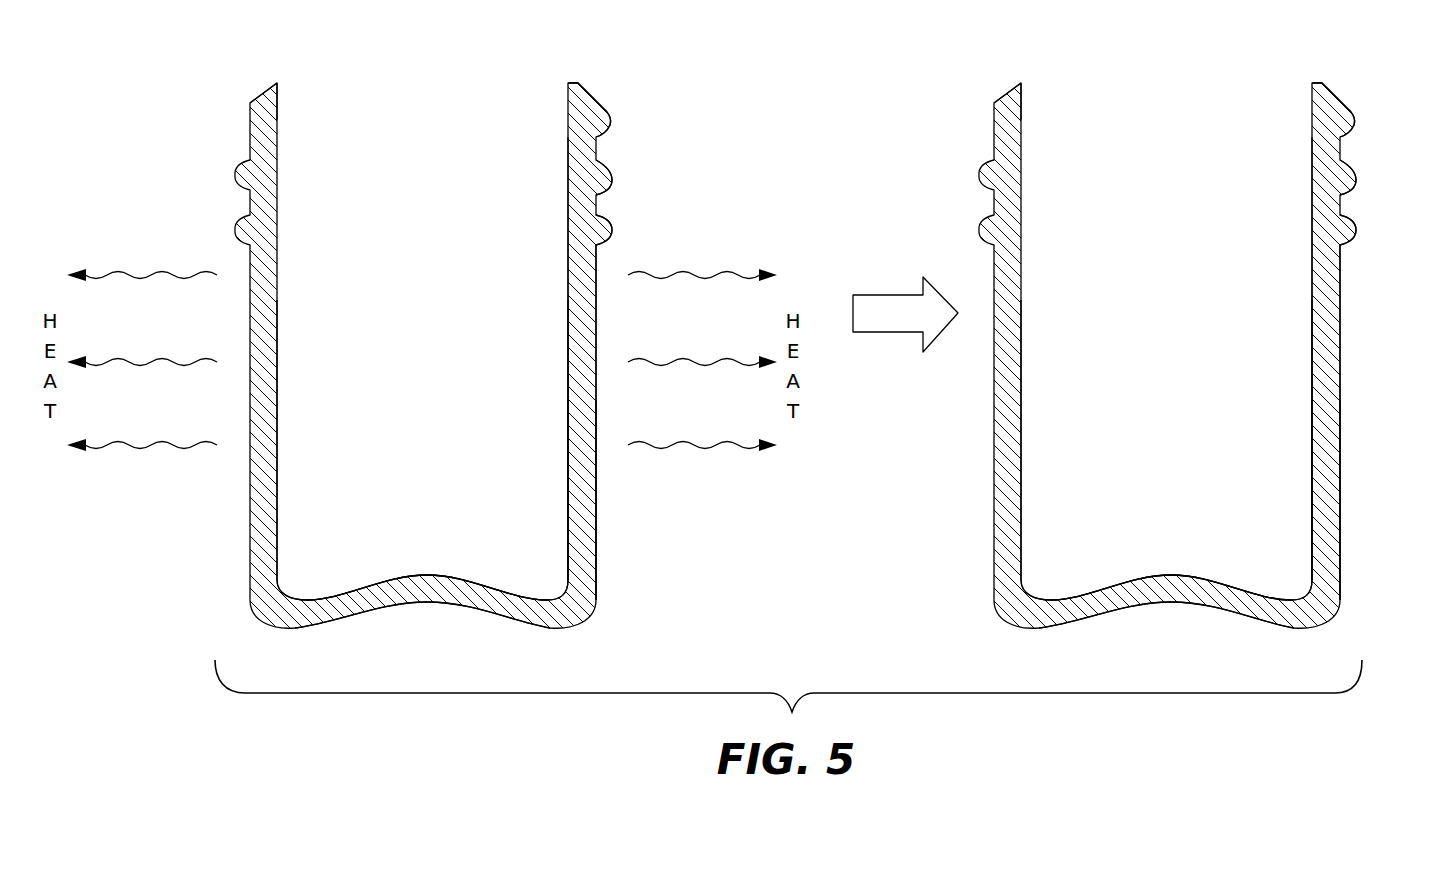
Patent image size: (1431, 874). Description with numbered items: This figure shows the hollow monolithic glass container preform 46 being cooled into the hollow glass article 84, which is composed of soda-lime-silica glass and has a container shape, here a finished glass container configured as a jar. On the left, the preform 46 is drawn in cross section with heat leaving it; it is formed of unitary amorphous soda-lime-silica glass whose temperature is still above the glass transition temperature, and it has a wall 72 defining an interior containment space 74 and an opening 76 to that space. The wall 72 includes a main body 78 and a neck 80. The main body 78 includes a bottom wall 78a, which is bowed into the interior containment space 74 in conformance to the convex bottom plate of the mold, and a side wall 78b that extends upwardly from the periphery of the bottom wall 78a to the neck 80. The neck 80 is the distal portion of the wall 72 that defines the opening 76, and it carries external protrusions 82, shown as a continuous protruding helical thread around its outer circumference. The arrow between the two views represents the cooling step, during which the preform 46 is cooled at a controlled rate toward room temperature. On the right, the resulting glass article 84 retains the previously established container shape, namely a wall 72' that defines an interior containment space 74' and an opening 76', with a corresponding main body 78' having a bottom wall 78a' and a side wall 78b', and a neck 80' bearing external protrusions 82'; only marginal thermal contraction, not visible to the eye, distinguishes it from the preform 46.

The hollow monolithic glass container preform 46 is at (404, 339).
The wall 72 is at (460, 339).
The interior containment space 74 is at (422, 450).
The opening 76 is at (257, 68).
The main body 78 is at (550, 368).
The bottom wall 78a is at (422, 618).
The side wall 78b is at (548, 500).
The neck 80 is at (557, 110).
The external protrusions 82 is at (640, 202).
The hollow glass article 84 is at (1152, 339).
The wall 72' is at (1195, 339).
The interior containment space 74' is at (1166, 450).
The opening 76' is at (1002, 68).
The main body 78' is at (1290, 368).
The bottom wall 78a' is at (1166, 618).
The side wall 78b' is at (1287, 500).
The neck 80' is at (1296, 110).
The external protrusions 82' is at (1375, 202).